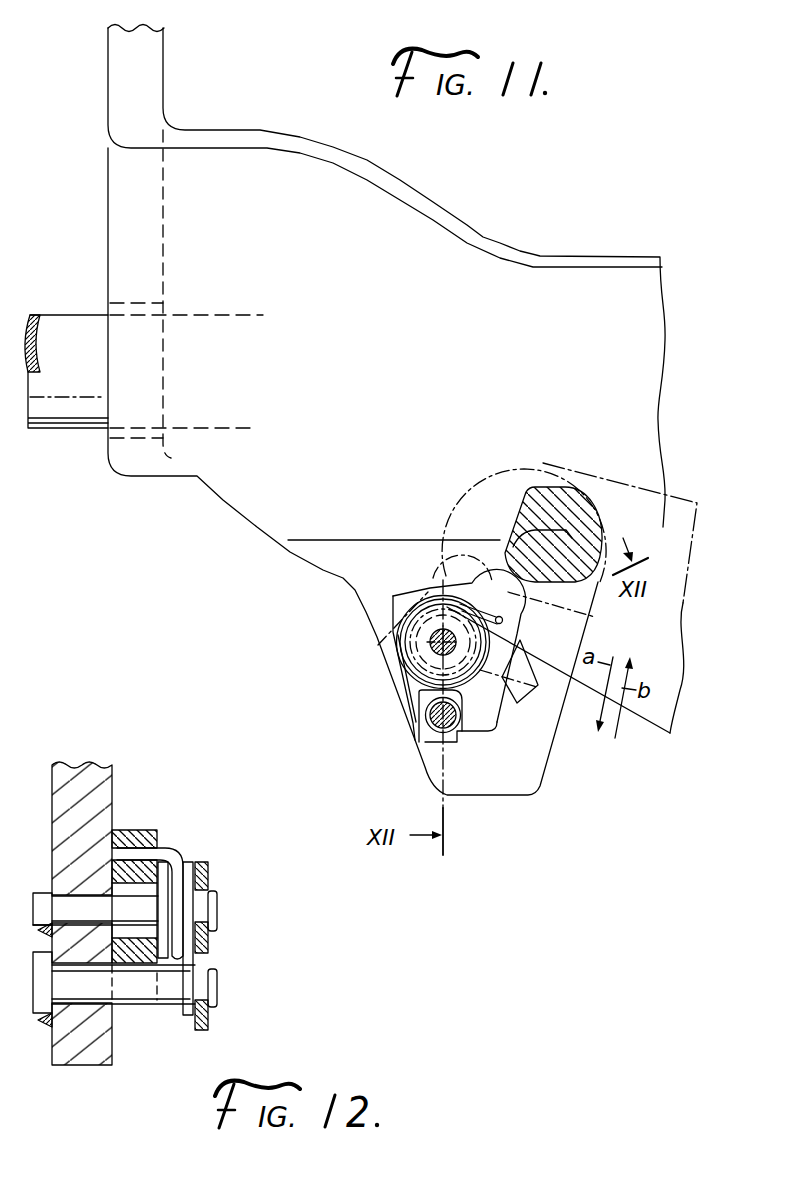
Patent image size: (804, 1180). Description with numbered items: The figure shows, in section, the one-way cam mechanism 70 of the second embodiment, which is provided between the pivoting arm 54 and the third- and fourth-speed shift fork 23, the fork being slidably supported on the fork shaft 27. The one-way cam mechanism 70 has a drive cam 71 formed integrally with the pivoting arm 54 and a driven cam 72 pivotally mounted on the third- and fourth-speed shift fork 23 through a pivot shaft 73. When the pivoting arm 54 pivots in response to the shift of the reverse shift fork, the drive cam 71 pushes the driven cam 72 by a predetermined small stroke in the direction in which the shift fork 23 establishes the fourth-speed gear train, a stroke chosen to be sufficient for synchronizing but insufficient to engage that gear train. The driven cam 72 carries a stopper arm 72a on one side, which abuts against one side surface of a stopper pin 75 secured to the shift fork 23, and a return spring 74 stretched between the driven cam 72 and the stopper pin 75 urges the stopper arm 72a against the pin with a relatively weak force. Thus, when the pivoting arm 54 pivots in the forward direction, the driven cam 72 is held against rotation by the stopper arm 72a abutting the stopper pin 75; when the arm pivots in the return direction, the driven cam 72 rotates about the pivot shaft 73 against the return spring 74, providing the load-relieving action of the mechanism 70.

In FIG. 11, the third- and fourth-speed shift fork 23 is at (162, 67).
In FIG. 12, the third- and fourth-speed shift fork 23 is at (108, 781).
In FIG. 11, the fork shaft 27 is at (65, 424).
In FIG. 11, the pivoting arm 54 is at (685, 657).
In FIG. 11, the one-way cam mechanism 70 is at (424, 528).
In FIG. 11, the drive cam 71 is at (567, 533).
In FIG. 11, the driven cam 72 is at (470, 582).
In FIG. 12, the driven cam 72 is at (136, 831).
In FIG. 11, the stopper arm 72a is at (493, 733).
In FIG. 12, the stopper arm 72a is at (157, 1004).
In FIG. 11, the pivot shaft 73 is at (493, 605).
In FIG. 12, the pivot shaft 73 is at (142, 920).
In FIG. 11, the return spring 74 is at (413, 693).
In FIG. 12, the return spring 74 is at (179, 859).
In FIG. 11, the stopper pin 75 is at (431, 725).
In FIG. 12, the stopper pin 75 is at (173, 1004).